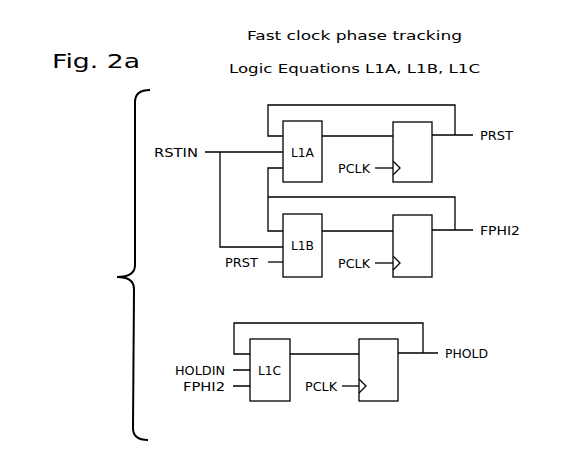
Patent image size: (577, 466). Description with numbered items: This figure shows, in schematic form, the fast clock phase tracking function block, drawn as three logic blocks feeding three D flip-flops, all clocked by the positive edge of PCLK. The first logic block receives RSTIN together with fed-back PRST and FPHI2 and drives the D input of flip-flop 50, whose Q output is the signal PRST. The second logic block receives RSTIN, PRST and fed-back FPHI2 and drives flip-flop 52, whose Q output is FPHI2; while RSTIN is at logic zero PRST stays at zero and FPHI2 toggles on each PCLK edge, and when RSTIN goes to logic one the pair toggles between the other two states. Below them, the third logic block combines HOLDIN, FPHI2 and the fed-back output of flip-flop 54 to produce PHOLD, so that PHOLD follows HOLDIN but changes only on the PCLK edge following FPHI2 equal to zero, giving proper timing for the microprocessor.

The flip-flop 50 is at (412, 152).
The flip-flop 52 is at (412, 246).
The flip-flop 54 is at (378, 370).